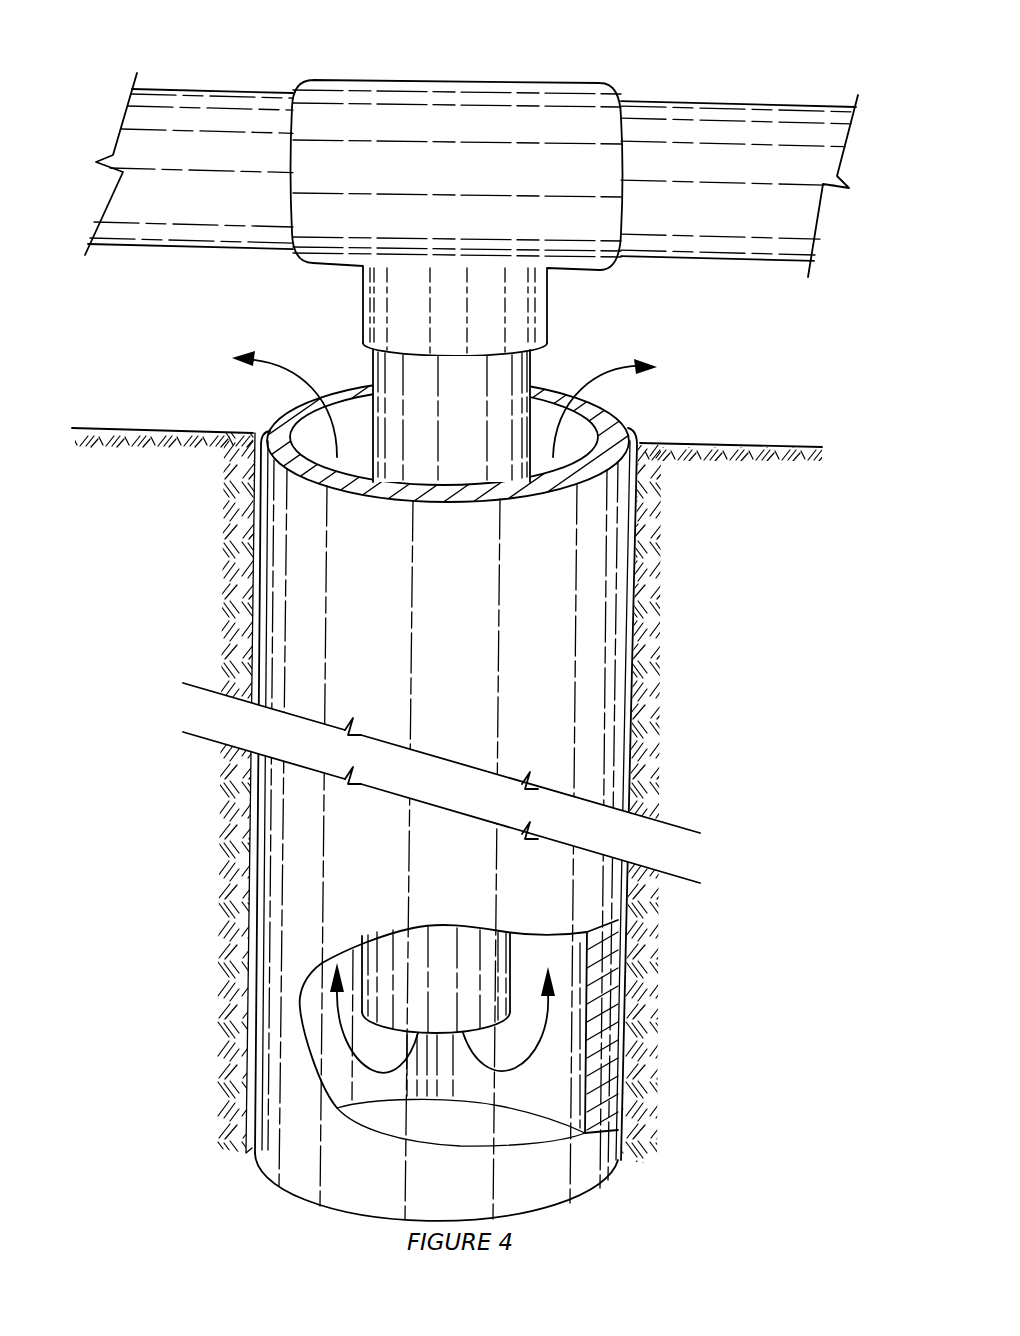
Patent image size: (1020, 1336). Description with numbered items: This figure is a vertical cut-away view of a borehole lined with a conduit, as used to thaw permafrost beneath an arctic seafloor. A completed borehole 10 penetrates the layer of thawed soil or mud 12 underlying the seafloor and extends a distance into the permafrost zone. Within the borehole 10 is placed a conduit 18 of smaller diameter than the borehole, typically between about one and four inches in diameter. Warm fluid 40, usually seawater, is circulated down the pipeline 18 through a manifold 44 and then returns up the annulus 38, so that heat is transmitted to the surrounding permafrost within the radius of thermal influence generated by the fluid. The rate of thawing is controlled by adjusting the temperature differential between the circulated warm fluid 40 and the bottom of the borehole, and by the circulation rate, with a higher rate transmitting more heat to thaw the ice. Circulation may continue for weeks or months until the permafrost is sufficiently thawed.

The borehole 10 is at (251, 522).
The thawed soil or mud 12 is at (766, 631).
The conduit 18 is at (288, 398).
The annulus 38 is at (352, 399).
The warm fluid 40 is at (276, 357).
The manifold 44 is at (650, 112).